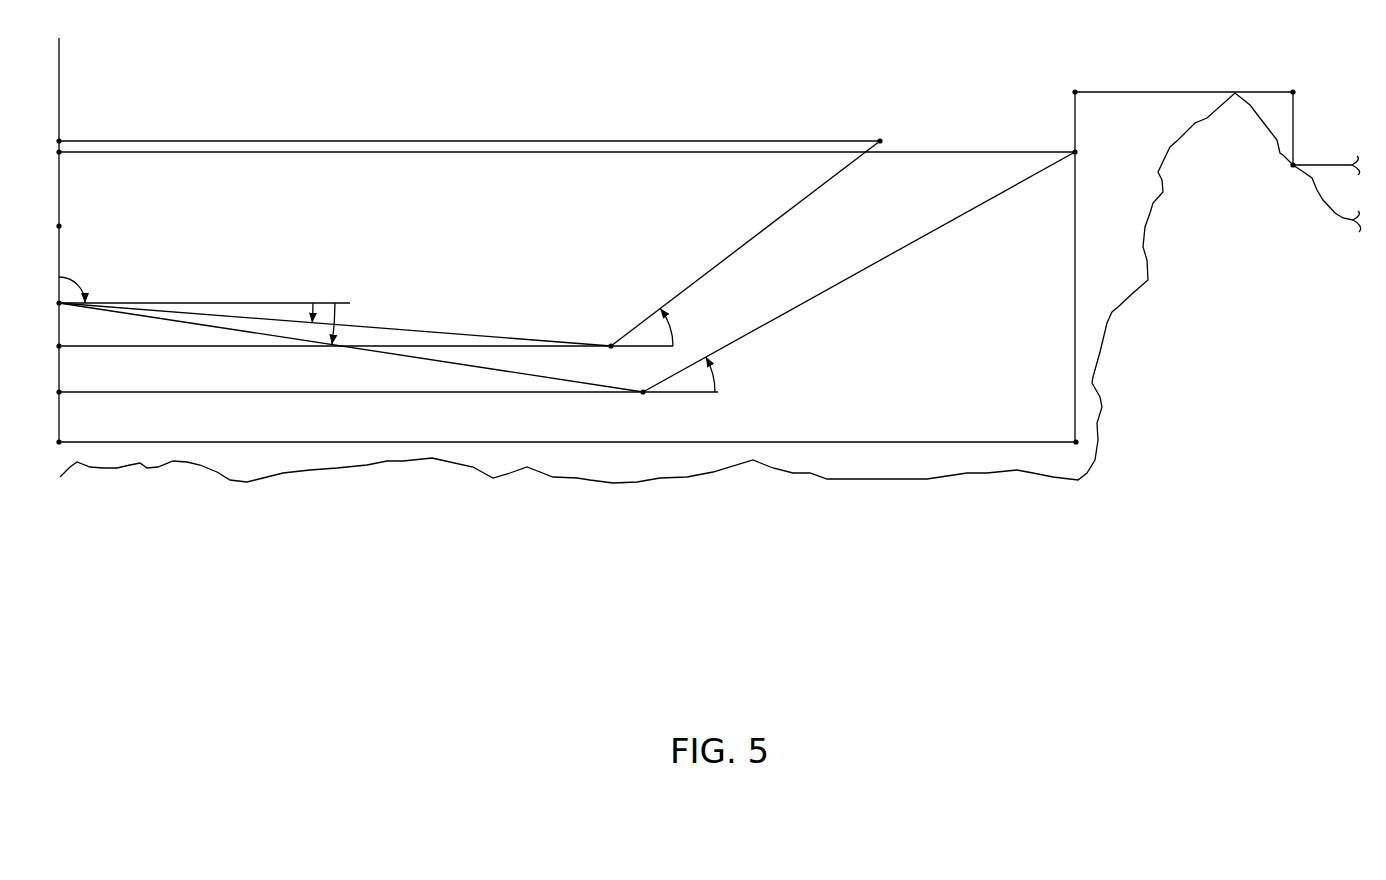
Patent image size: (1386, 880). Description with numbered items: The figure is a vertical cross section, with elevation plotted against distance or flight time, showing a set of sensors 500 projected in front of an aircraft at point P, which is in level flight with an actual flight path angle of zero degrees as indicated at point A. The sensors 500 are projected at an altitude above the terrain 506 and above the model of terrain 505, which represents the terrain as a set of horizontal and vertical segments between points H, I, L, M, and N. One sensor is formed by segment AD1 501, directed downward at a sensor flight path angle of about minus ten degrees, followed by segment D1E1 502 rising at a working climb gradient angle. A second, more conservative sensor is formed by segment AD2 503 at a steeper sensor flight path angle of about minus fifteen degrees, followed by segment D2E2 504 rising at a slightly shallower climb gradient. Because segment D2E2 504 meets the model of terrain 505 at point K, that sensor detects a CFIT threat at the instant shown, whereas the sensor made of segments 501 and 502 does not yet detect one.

The set of sensors 500 is at (513, 212).
The segment AD1 501 is at (395, 327).
The segment D1E1 502 is at (773, 222).
The segment AD2 503 is at (420, 358).
The segment D2E2 504 is at (929, 233).
The model of terrain 505 is at (1188, 92).
The terrain 506 is at (1153, 205).